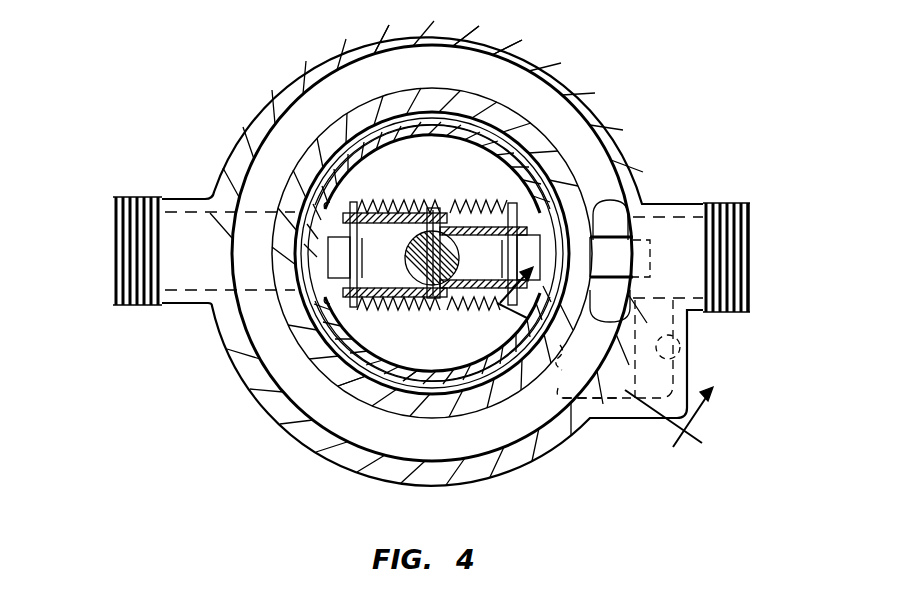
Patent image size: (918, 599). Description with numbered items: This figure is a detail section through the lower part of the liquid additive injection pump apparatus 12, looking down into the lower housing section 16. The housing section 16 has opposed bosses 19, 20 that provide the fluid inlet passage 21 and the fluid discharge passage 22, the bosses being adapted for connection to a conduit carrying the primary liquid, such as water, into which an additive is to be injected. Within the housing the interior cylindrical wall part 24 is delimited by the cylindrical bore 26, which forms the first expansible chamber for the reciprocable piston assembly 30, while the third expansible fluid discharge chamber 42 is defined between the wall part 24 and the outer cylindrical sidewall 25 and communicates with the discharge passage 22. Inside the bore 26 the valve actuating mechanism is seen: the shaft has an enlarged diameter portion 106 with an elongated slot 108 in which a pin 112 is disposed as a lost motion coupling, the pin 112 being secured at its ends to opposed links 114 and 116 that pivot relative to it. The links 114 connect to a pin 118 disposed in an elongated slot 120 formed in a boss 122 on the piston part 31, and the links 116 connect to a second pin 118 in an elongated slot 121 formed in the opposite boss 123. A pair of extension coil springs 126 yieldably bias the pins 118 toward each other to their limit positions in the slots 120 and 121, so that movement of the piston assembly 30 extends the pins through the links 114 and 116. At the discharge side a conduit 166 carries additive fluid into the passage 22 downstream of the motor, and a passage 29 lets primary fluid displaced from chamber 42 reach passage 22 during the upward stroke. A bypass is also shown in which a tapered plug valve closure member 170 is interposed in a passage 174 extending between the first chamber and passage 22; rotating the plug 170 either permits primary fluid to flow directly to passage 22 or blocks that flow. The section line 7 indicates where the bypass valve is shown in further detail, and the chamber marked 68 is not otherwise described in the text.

The liquid additive injection pump apparatus 12 is at (262, 63).
The lower housing section 16 is at (388, 29).
The outer cylindrical sidewall 25 is at (405, 29).
The third expansible fluid discharge chamber 42 is at (493, 73).
The interior cylindrical wall part 24 is at (343, 130).
The elongated slot 120 is at (292, 215).
The pin 118 is at (542, 197).
The cylindrical bore 26 is at (500, 143).
The chamber 68 is at (440, 164).
The boss 19 is at (178, 197).
The fluid inlet passage 21 is at (112, 286).
The boss 20 is at (665, 200).
The fluid discharge passage 22 is at (748, 271).
The elongated slot 121 is at (575, 219).
The conduit 166 is at (639, 238).
The passage 29 is at (636, 296).
The passage 174 is at (692, 344).
The tapered plug valve closure member 170 is at (624, 382).
The boss 123 is at (560, 352).
The boss 122 is at (398, 304).
The link 114 is at (300, 173).
The link 116 is at (504, 208).
The enlarged diameter portion 106 is at (462, 238).
The extension coil spring 126 is at (388, 203).
The pin 112 is at (466, 186).
The elongated slot 108 is at (452, 307).
The section line 7- 7 is at (595, 366).
The piston part 31 is at (333, 366).
The reciprocable piston assembly 30 is at (427, 392).